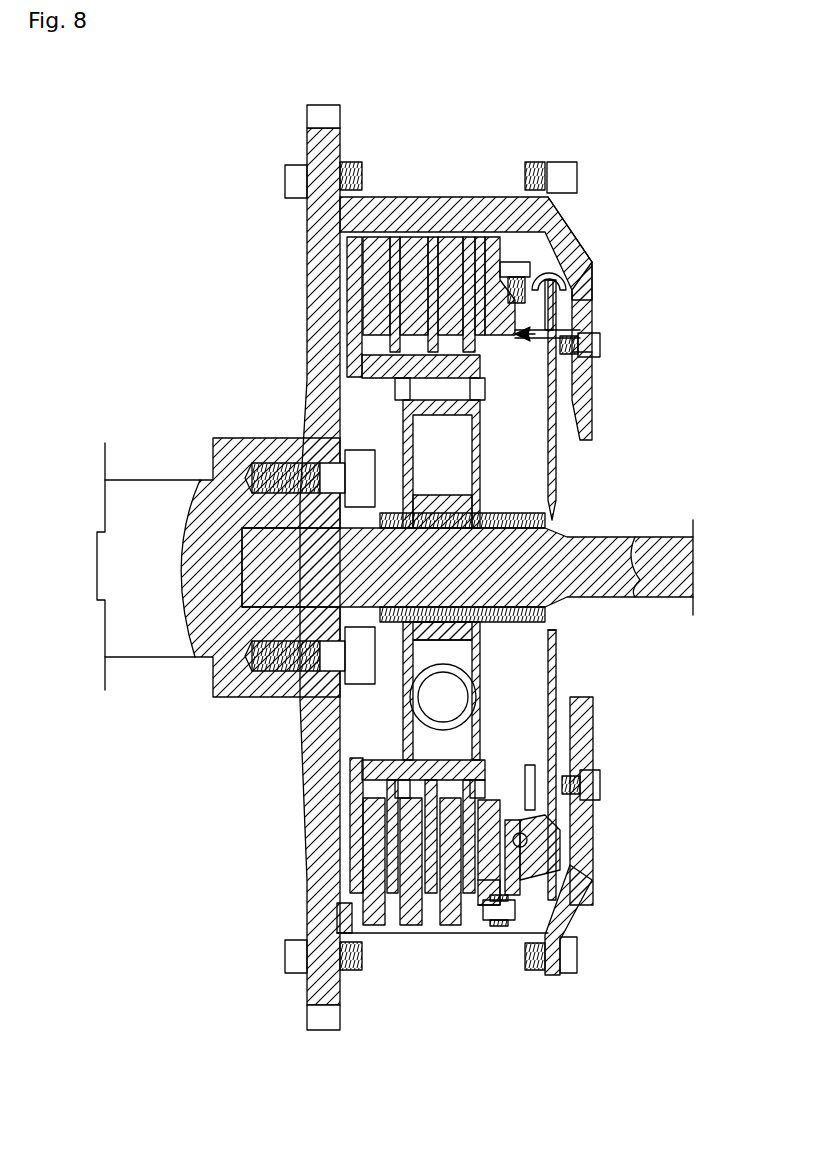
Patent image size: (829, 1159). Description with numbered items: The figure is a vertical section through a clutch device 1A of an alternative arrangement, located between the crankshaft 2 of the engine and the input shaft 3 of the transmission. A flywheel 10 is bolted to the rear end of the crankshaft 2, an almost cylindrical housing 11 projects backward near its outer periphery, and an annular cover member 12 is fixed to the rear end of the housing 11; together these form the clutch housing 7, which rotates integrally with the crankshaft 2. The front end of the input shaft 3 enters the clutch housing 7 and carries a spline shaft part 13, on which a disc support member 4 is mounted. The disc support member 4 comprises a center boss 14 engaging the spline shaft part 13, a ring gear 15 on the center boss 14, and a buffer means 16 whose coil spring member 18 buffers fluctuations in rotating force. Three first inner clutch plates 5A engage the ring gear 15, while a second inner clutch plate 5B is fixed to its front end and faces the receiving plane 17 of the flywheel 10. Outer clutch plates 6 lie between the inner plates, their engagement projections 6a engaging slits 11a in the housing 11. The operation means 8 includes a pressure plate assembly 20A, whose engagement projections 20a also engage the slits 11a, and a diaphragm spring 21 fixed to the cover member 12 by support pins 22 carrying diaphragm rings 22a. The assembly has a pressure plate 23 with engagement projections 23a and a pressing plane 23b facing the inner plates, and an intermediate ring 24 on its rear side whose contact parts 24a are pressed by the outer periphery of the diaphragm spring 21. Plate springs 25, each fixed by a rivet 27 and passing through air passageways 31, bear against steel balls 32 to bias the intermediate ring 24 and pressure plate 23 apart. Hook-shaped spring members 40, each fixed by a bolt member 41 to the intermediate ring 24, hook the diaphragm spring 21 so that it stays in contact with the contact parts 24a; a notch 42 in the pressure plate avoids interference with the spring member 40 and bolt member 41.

The clutch device 1A is at (645, 212).
The crankshaft 2 is at (142, 490).
The input shaft 3 is at (668, 540).
The disc support member 4 is at (530, 455).
The first inner clutch plates 5A is at (440, 250).
The second inner clutch plate 5B is at (355, 262).
The outer clutch plates 6 is at (445, 850).
The engagement projections 6a is at (450, 928).
The clutch housing 7 is at (580, 218).
The operation means 8 is at (555, 210).
The flywheel 10 is at (312, 215).
The housing 11 is at (372, 197).
The slits 11a is at (345, 917).
The cover member 12 is at (592, 290).
The spline shaft part 13 is at (550, 515).
The center boss 14 is at (530, 500).
The ring gear 15 is at (380, 362).
The buffer means 16 is at (490, 425).
The receiving plane 17 is at (352, 318).
The spring member 18 is at (420, 710).
The pressure plate assembly 20A is at (530, 905).
The engagement projections 20a is at (513, 937).
The diaphragm spring 21 is at (558, 645).
The support pins 22 is at (590, 390).
The diaphragm rings 22a is at (585, 805).
The pressure plate 23 is at (492, 235).
The engagement projections 23a is at (508, 925).
The pressing plane 23b is at (478, 920).
The intermediate ring 24 is at (545, 328).
The contact parts 24a is at (553, 290).
The plate springs 25 is at (520, 885).
The rivet 27 is at (520, 918).
The air passageways 31 is at (552, 752).
The steel balls 32 is at (528, 848).
The spring members 40 is at (566, 278).
The bolt member 41 is at (516, 275).
The notch 42 is at (507, 260).